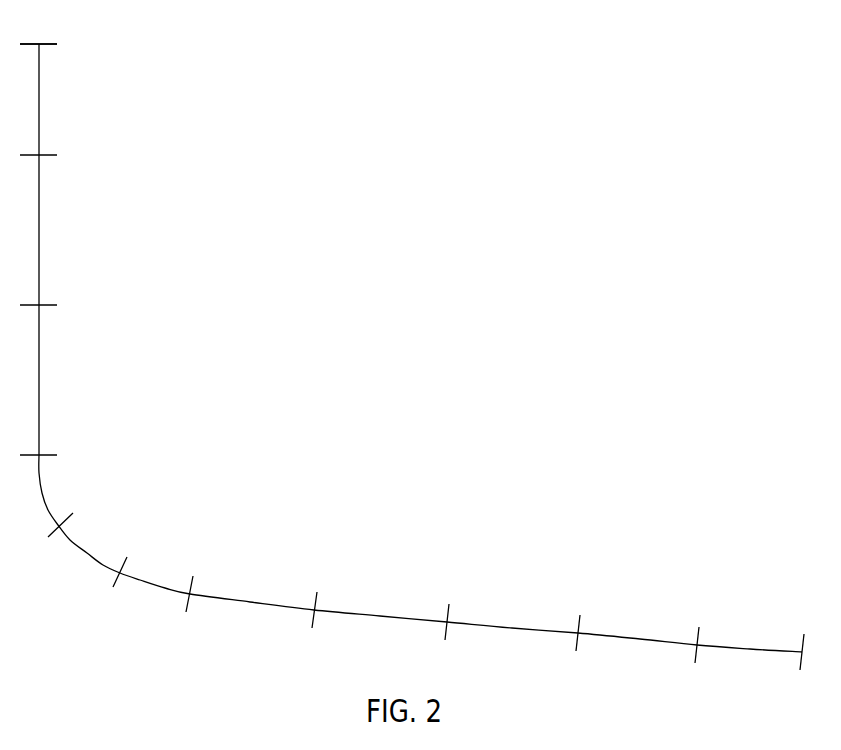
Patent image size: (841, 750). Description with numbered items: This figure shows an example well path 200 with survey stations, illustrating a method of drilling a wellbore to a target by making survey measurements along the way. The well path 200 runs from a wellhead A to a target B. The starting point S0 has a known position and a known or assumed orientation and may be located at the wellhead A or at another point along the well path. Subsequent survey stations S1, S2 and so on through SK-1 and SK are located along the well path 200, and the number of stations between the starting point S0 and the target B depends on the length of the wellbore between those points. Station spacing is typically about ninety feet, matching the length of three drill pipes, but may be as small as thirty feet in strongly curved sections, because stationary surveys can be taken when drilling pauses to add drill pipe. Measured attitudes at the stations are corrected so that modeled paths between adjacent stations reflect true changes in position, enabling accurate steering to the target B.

The well path 200 is at (39, 253).
The wellhead A is at (38, 30).
The target B is at (814, 653).
The starting point S0 is at (55, 46).
The survey station S1 is at (55, 158).
The survey station S2 is at (55, 306).
The survey station SK-1 is at (587, 616).
The survey station SK is at (703, 628).